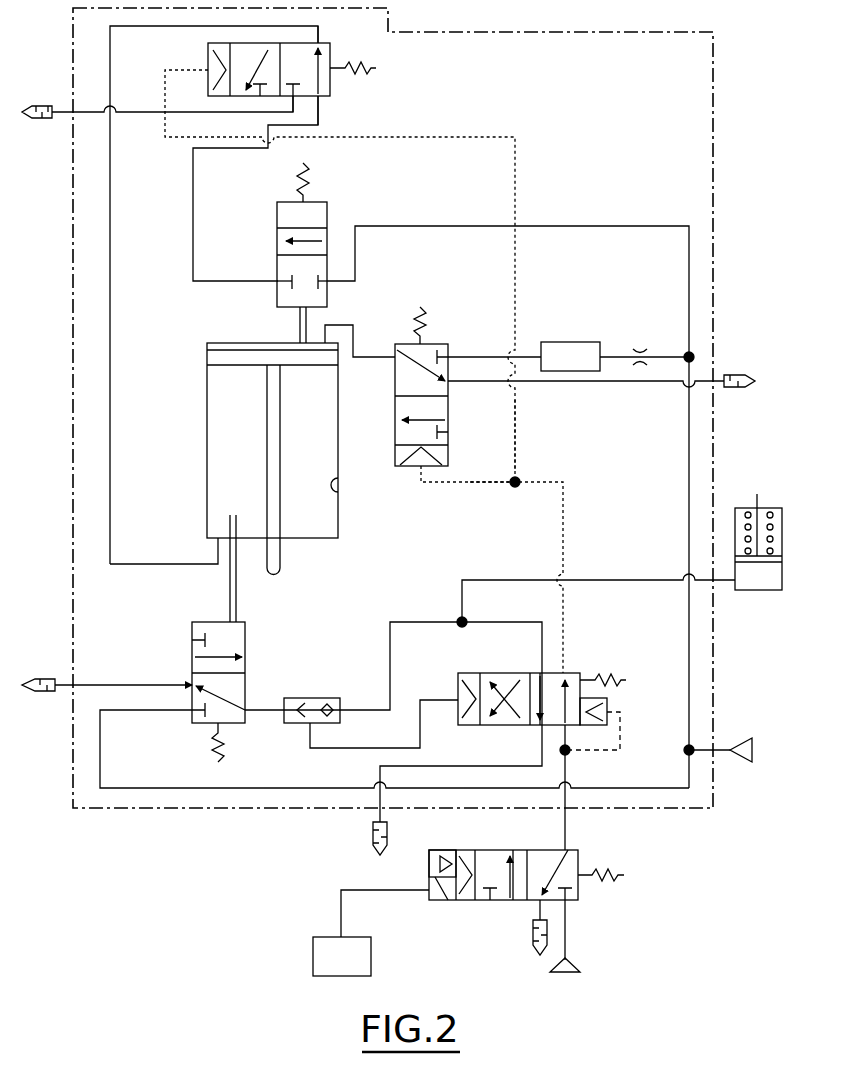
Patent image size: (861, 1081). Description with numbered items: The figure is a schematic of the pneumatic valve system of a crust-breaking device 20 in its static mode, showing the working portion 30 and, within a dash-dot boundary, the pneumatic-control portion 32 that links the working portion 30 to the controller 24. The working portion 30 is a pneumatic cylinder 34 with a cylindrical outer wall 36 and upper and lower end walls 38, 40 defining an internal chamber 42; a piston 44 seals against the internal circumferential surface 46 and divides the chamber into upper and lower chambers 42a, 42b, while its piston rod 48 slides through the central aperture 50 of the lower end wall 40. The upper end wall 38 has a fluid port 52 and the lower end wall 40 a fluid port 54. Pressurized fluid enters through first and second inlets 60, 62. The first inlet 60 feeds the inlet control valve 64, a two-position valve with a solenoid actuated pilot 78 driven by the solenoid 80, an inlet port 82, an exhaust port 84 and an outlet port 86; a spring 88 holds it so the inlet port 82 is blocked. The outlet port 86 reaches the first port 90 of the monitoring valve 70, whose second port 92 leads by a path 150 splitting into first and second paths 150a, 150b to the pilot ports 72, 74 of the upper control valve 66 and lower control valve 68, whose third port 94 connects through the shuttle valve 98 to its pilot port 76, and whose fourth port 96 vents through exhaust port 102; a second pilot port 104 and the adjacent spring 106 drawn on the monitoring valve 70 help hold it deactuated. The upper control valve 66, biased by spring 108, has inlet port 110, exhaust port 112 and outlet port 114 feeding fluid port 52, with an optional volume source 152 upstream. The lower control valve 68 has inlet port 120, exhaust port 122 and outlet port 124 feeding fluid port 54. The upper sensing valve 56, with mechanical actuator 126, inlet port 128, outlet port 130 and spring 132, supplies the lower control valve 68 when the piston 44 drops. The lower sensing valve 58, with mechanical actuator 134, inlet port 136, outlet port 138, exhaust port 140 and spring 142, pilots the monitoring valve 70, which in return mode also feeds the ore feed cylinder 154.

The crust-breaking device 20 is at (228, 885).
The controller 24 is at (312, 958).
The working portion 30 is at (260, 451).
The pneumatic-control portion 32 is at (718, 90).
The pneumatic cylinder 34 is at (263, 420).
The cylindrical outer wall 36 is at (340, 412).
The upper end wall 38 is at (215, 343).
The lower end wall 40 is at (330, 540).
The internal chamber 42 is at (220, 450).
The upper chamber 42a is at (256, 345).
The lower chamber 42b is at (218, 497).
The piston 44 is at (206, 356).
The internal circumferential surface 46 is at (342, 484).
The piston rod 48 is at (268, 570).
The central aperture 50 is at (283, 540).
The fluid port 52 is at (335, 343).
The fluid port 54 is at (210, 540).
The upper sensing valve 56 is at (308, 228).
The lower sensing valve 58 is at (213, 695).
The first inlet 60 is at (580, 962).
The second inlet 62 is at (746, 738).
The inlet control valve 64 is at (531, 886).
The upper control valve 66 is at (431, 388).
The lower control valve 68 is at (331, 225).
The monitoring valve 70 is at (478, 725).
The pilot port 72 is at (400, 470).
The pilot port 74 is at (212, 53).
The pilot port 76 is at (468, 672).
The solenoid actuated pilot 78 is at (462, 855).
The solenoid 80 is at (435, 897).
The inlet port 82 is at (568, 902).
The exhaust port 84 is at (540, 910).
The outlet port 86 is at (570, 850).
The spring 88 is at (626, 876).
The first port 90 is at (551, 698).
The second port 92 is at (568, 673).
The third port 94 is at (540, 673).
The fourth port 96 is at (538, 726).
The shuttle valve 98 is at (310, 698).
The exhaust port 102 is at (372, 828).
The second pilot port 104 is at (604, 706).
The return spring 106 is at (618, 676).
The spring 108 is at (424, 306).
The inlet port 110 is at (450, 355).
The exhaust port 112 is at (372, 70).
The outlet port 114 is at (394, 356).
The inlet port 120 is at (320, 98).
The exhaust port 122 is at (295, 98).
The outlet port 124 is at (322, 42).
The mechanical actuator 126 is at (310, 310).
The inlet port 128 is at (330, 281).
The outlet port 130 is at (275, 280).
The spring 132 is at (308, 168).
The mechanical actuator 134 is at (228, 580).
The inlet port 136 is at (188, 712).
The outlet port 138 is at (265, 698).
The exhaust port 140 is at (192, 682).
The spring 142 is at (215, 758).
The path 150 is at (566, 530).
The first path 150a is at (477, 484).
The second path 150b is at (518, 436).
The volume source 152 is at (590, 372).
The ore feed cylinder 154 is at (762, 588).